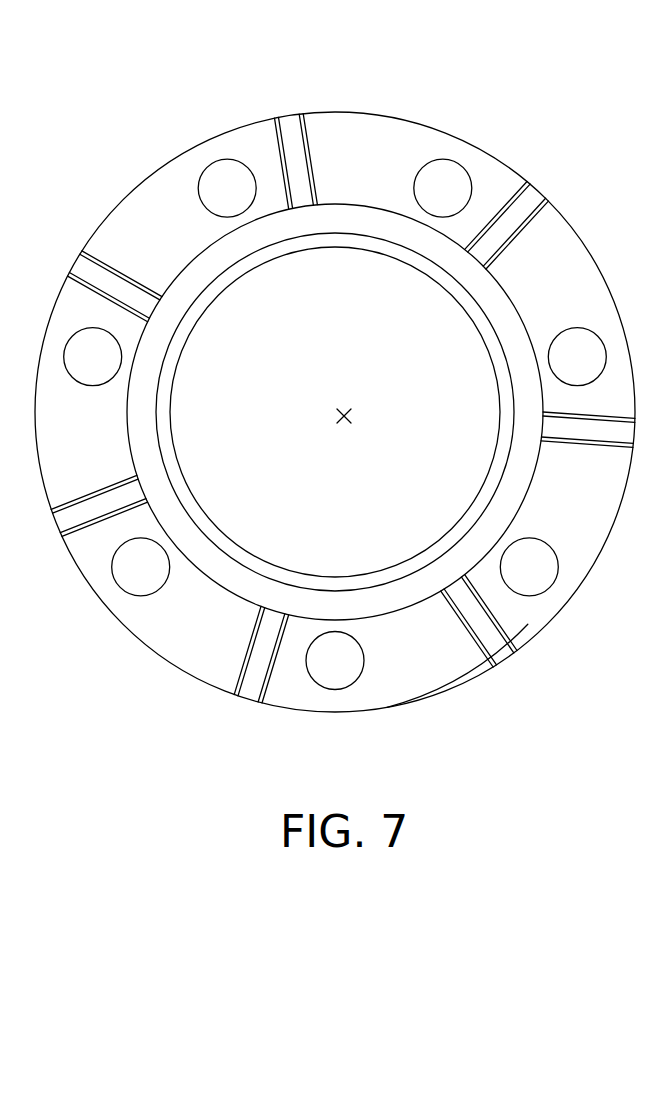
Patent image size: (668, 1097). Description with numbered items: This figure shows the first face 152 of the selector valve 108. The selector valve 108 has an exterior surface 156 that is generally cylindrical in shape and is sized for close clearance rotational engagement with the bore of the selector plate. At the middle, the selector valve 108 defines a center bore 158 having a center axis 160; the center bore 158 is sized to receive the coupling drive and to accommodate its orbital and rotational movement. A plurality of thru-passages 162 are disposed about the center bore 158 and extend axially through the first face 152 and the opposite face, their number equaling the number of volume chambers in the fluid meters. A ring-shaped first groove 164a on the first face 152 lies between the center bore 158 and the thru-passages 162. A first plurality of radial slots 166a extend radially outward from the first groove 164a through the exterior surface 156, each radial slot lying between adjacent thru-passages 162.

The selector valve 108 is at (525, 165).
The first face 152 is at (372, 156).
The exterior surface 156 is at (425, 698).
The center bore 158 is at (290, 255).
The center axis 160 is at (353, 414).
The thru-passages 162 is at (557, 582).
The first groove 164a is at (148, 365).
The first plurality of radial slots 166a is at (291, 133).